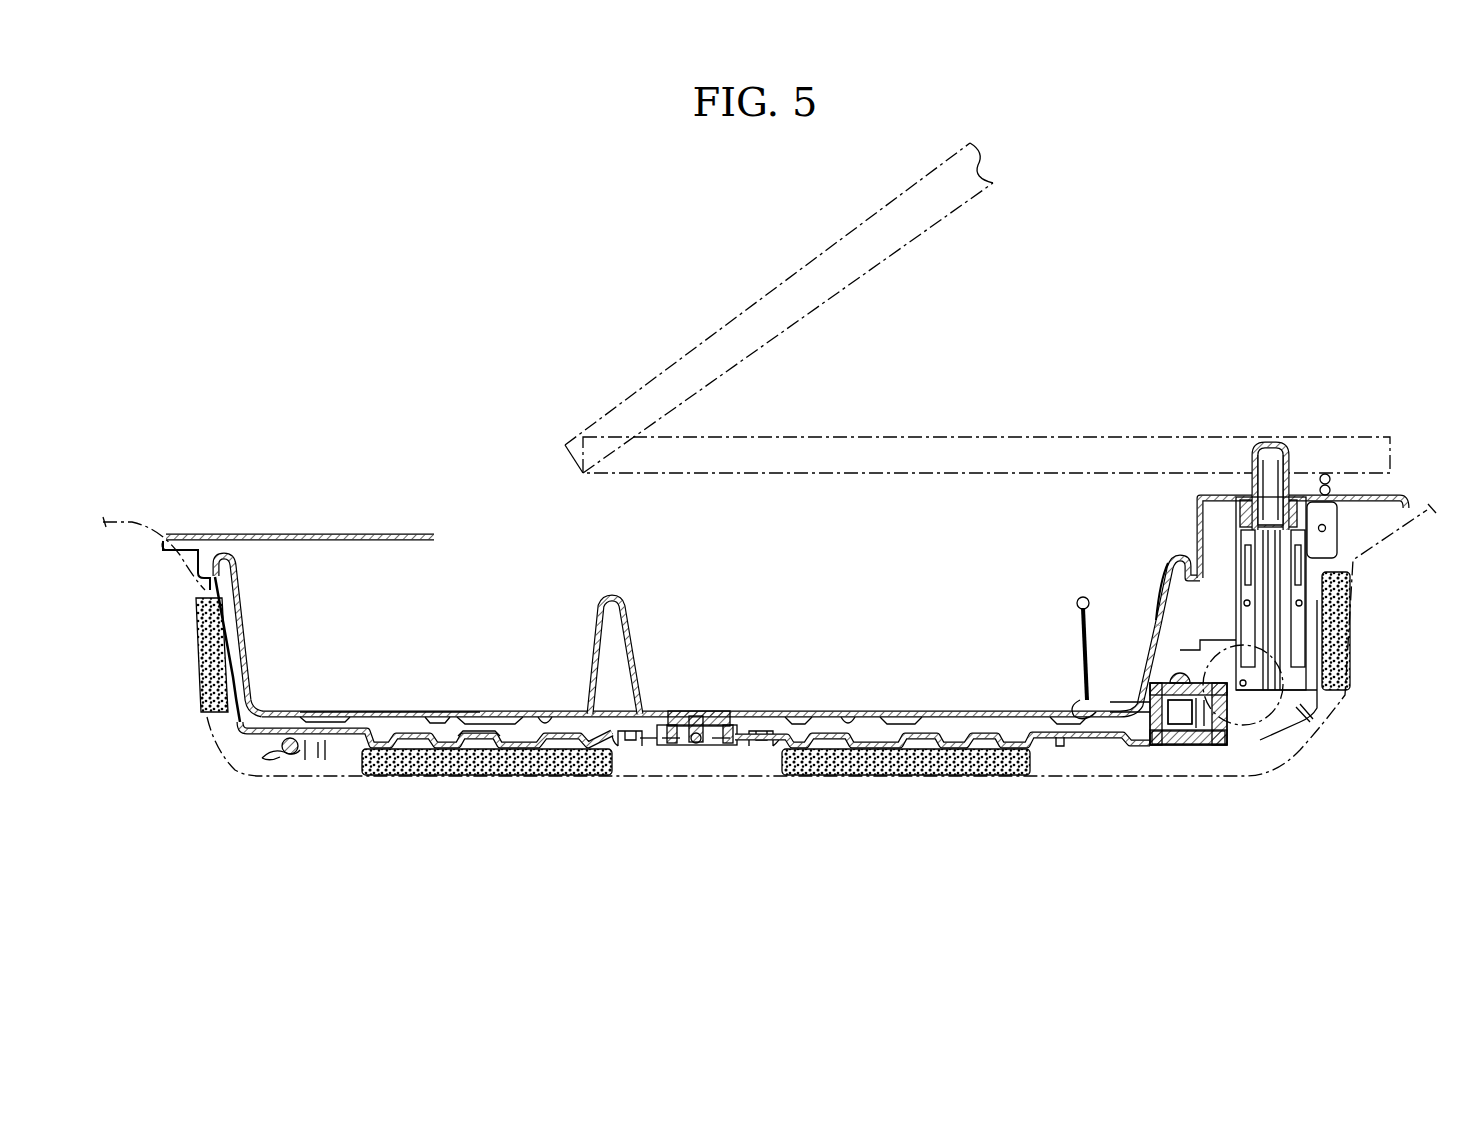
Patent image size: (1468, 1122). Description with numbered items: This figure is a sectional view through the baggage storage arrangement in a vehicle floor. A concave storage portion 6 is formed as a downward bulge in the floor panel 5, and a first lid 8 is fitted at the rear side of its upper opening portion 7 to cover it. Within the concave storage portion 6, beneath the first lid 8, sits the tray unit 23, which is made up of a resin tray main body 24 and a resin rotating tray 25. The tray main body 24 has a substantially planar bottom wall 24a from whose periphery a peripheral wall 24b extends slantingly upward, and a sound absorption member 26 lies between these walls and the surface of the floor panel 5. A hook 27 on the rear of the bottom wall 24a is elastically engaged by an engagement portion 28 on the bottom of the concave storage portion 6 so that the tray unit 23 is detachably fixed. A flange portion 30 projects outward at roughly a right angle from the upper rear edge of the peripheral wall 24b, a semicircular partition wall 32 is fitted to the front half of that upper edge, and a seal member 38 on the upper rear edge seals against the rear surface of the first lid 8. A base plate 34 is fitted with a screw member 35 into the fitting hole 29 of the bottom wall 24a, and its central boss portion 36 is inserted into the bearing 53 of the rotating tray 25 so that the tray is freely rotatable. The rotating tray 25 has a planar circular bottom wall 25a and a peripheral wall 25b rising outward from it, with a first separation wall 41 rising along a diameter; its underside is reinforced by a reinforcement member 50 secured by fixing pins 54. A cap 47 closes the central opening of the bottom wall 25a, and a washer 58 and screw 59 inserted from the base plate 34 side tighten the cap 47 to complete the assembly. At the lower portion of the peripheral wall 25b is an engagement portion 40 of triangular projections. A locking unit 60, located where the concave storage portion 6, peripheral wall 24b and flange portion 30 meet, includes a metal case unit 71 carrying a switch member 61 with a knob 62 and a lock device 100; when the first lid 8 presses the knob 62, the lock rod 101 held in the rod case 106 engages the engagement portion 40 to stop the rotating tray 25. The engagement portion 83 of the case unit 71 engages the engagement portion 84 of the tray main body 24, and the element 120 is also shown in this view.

The floor panel 5 is at (1300, 758).
The concave storage portion 6 is at (1147, 768).
The upper opening portion 7 is at (130, 522).
The first lid 8 is at (868, 218).
The tray unit 23 is at (506, 700).
The tray main body 24 is at (240, 732).
The bottom wall 24a is at (872, 748).
The peripheral wall 24b is at (200, 592).
The rotating tray 25 is at (370, 712).
The bottom wall 25a is at (436, 712).
The peripheral wall 25b is at (242, 625).
The sound absorption member 26 is at (205, 690).
The hook 27 is at (272, 762).
The engagement portion 28 is at (296, 756).
The fitting hole 29 is at (648, 748).
The flange portion 30 is at (1395, 495).
The partition wall 32 is at (373, 533).
The base plate 34 is at (740, 752).
The screw member 35 is at (620, 748).
The boss portion 36 is at (712, 716).
The seal member 38 is at (1327, 474).
The engagement portion 40 is at (1090, 748).
The first separation wall 41 is at (630, 628).
The cap 47 is at (680, 716).
The reinforcement member 50 is at (470, 748).
The bearing 53 is at (670, 748).
The fixing pins 54 is at (546, 712).
The washer 58 is at (690, 752).
The screw 59 is at (703, 750).
The locking unit 60 is at (1100, 556).
The switch member 61 is at (1226, 535).
The knob 62 is at (1272, 446).
The case unit 71 is at (1336, 622).
The engagement portion 83 is at (1180, 712).
The engagement portion 84 is at (1116, 755).
The lock device 100 is at (1198, 752).
The lock rod 101 is at (1150, 706).
The rod case 106 is at (1170, 662).
The guide 120 is at (1262, 760).